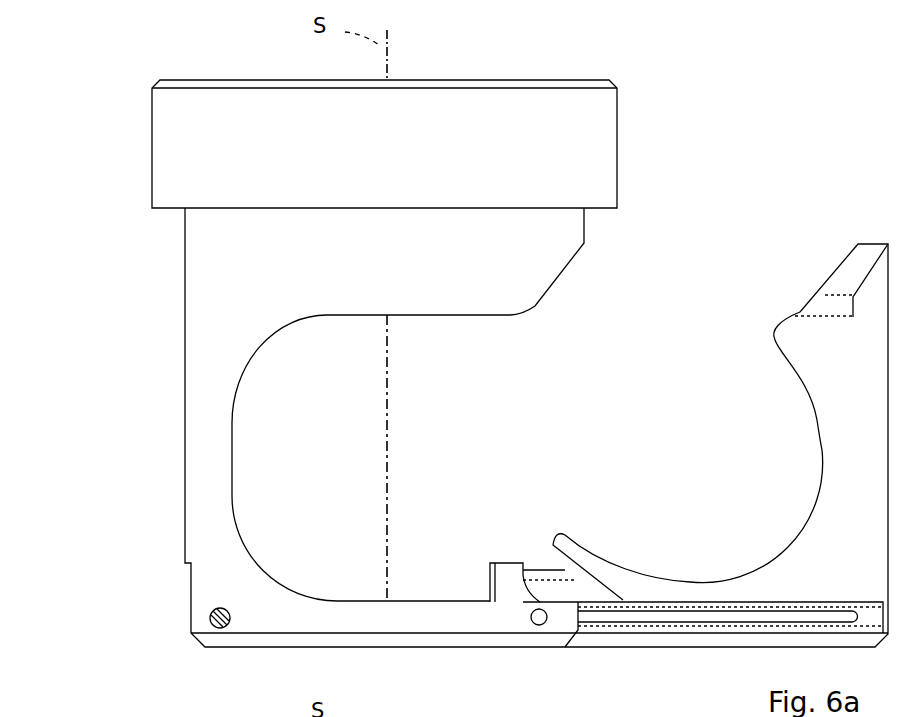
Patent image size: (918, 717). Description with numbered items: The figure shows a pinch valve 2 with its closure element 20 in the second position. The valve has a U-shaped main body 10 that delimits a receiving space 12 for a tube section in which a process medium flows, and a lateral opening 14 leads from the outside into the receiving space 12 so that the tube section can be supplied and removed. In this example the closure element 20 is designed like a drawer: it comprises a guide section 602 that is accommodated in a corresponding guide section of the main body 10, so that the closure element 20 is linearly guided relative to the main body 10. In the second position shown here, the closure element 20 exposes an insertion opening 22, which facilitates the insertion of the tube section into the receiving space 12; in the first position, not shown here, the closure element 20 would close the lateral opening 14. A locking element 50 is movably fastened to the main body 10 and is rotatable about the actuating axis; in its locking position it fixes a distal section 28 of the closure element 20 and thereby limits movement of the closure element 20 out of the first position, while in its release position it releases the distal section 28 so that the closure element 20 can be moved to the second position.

The pinch valve 2 is at (92, 186).
The main body 10 is at (198, 451).
The receiving space 12 is at (304, 450).
The lateral opening 14 is at (583, 417).
The closure element 20 is at (836, 436).
The insertion opening 22 is at (707, 222).
The distal section 28 is at (866, 256).
The locking element 50 is at (588, 165).
The guide section 602 is at (655, 617).